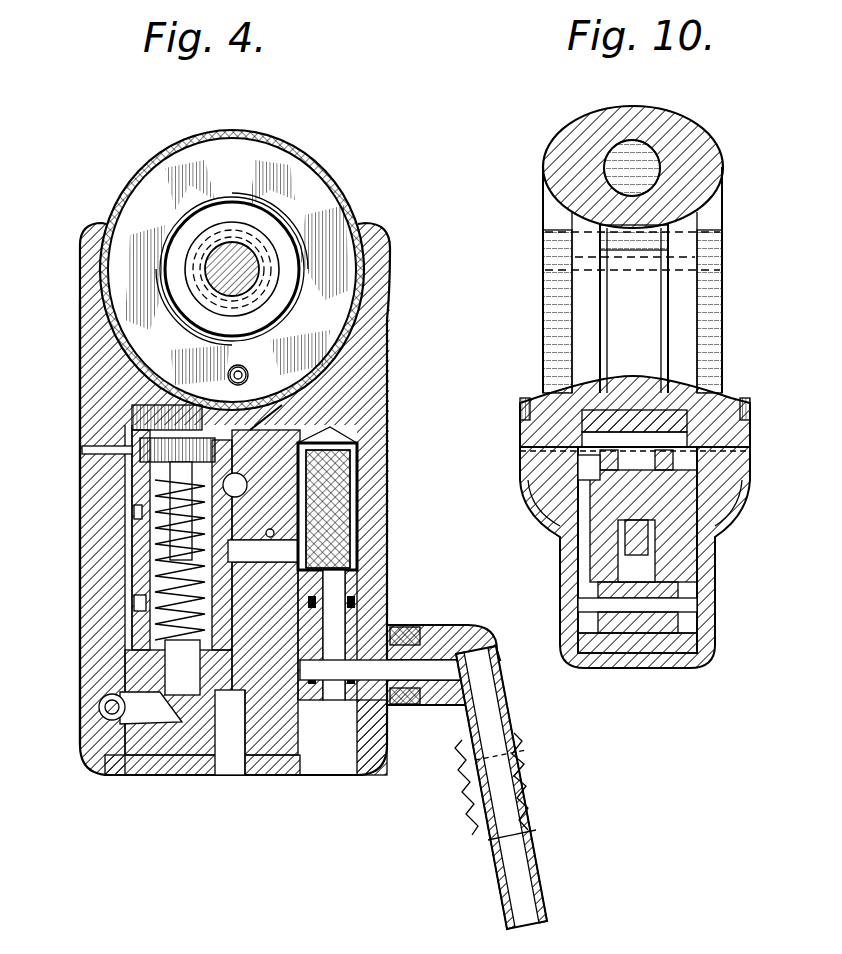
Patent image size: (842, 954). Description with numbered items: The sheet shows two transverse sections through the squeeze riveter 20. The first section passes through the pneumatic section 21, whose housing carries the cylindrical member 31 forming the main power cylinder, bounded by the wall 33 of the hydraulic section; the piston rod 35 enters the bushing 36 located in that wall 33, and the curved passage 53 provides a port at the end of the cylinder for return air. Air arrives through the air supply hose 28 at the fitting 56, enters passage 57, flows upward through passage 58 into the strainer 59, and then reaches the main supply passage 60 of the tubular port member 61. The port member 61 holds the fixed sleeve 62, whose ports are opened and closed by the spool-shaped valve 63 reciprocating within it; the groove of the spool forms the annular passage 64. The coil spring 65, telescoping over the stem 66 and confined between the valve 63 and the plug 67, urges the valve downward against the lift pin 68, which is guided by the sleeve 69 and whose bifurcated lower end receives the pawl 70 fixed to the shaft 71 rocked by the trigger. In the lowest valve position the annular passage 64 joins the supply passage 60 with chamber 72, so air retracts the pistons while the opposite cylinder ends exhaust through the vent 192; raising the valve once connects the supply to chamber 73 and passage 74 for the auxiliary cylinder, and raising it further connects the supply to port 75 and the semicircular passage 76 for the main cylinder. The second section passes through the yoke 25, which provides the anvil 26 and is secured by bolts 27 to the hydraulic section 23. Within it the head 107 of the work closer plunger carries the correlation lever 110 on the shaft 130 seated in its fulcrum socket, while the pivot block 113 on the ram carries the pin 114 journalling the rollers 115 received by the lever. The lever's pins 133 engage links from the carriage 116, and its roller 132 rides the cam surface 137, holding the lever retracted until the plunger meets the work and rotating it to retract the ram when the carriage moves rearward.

In FIG. 4, the squeeze riveter 20 is at (398, 318).
In FIG. 10, the squeeze riveter 20 is at (685, 106).
In FIG. 4, the pneumatic section 21 is at (378, 352).
In FIG. 10, the hydraulic section 23 is at (660, 666).
In FIG. 10, the yoke 25 is at (718, 320).
In FIG. 10, the anvil 26 is at (622, 140).
In FIG. 10, the bolts 27 is at (530, 396).
In FIG. 4, the air supply hose 28 is at (540, 862).
In FIG. 4, the cylindrical member 31 is at (290, 146).
In FIG. 4, the wall of the hydraulic section 33 is at (196, 222).
In FIG. 4, the piston rod 35 is at (242, 256).
In FIG. 4, the bushing 36 is at (192, 255).
In FIG. 4, the curved passage 53 is at (246, 372).
In FIG. 4, the fitting 56 is at (486, 675).
In FIG. 4, the passage 57 is at (405, 640).
In FIG. 4, the passage 58 is at (338, 600).
In FIG. 4, the strainer 59 is at (345, 488).
In FIG. 4, the main supply passage 60 is at (345, 540).
In FIG. 4, the port member 61 is at (251, 379).
In FIG. 4, the sleeve 62 is at (132, 615).
In FIG. 4, the valve 63 is at (215, 527).
In FIG. 4, the annular passage 64 is at (150, 578).
In FIG. 4, the coil spring 65 is at (136, 600).
In FIG. 4, the stem 66 is at (180, 476).
In FIG. 4, the plug 67 is at (175, 455).
In FIG. 4, the lift pin 68 is at (225, 690).
In FIG. 4, the sleeve 69 is at (222, 695).
In FIG. 4, the pawl 70 is at (162, 720).
In FIG. 4, the shaft 71 is at (98, 710).
In FIG. 4, the chamber 72 is at (220, 590).
In FIG. 4, the chamber 73 is at (136, 518).
In FIG. 4, the passage 74 is at (270, 528).
In FIG. 4, the port 75 is at (135, 490).
In FIG. 4, the semicircular passage 76 is at (282, 417).
In FIG. 10, the head 107 is at (620, 540).
In FIG. 10, the correlation lever 110 is at (690, 480).
In FIG. 10, the pivot block 113 is at (630, 638).
In FIG. 10, the pin 114 is at (700, 605).
In FIG. 10, the rollers 115 is at (700, 620).
In FIG. 10, the carriage 116 is at (672, 647).
In FIG. 10, the shaft 130 is at (625, 495).
In FIG. 10, the roller 132 is at (630, 455).
In FIG. 10, the pins 133 is at (690, 505).
In FIG. 10, the cam surface 137 is at (633, 412).
In FIG. 4, the vent 192 is at (130, 452).